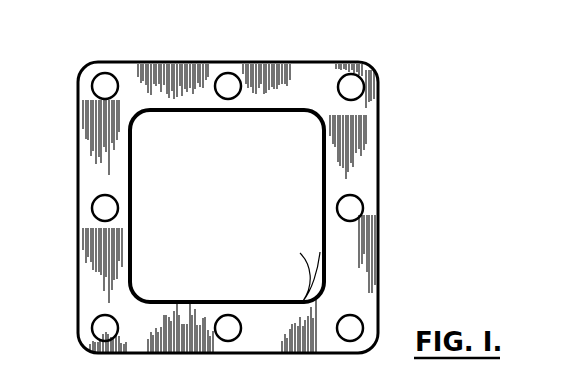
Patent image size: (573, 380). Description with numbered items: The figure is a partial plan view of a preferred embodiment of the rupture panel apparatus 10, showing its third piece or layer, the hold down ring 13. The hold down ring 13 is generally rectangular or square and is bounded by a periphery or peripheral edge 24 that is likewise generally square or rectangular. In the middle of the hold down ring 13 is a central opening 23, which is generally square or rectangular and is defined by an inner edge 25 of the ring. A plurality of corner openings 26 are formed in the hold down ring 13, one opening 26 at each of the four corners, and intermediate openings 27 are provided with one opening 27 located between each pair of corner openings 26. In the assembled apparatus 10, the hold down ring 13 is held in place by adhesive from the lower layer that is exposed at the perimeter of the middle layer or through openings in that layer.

The rupture panel apparatus 10 is at (427, 63).
The hold down ring 13 is at (378, 173).
The central opening 23 is at (145, 235).
The peripheral edge 24 is at (380, 287).
The inner edge 25 is at (132, 168).
The corner openings 26 is at (100, 88).
The intermediate openings 27 is at (228, 86).